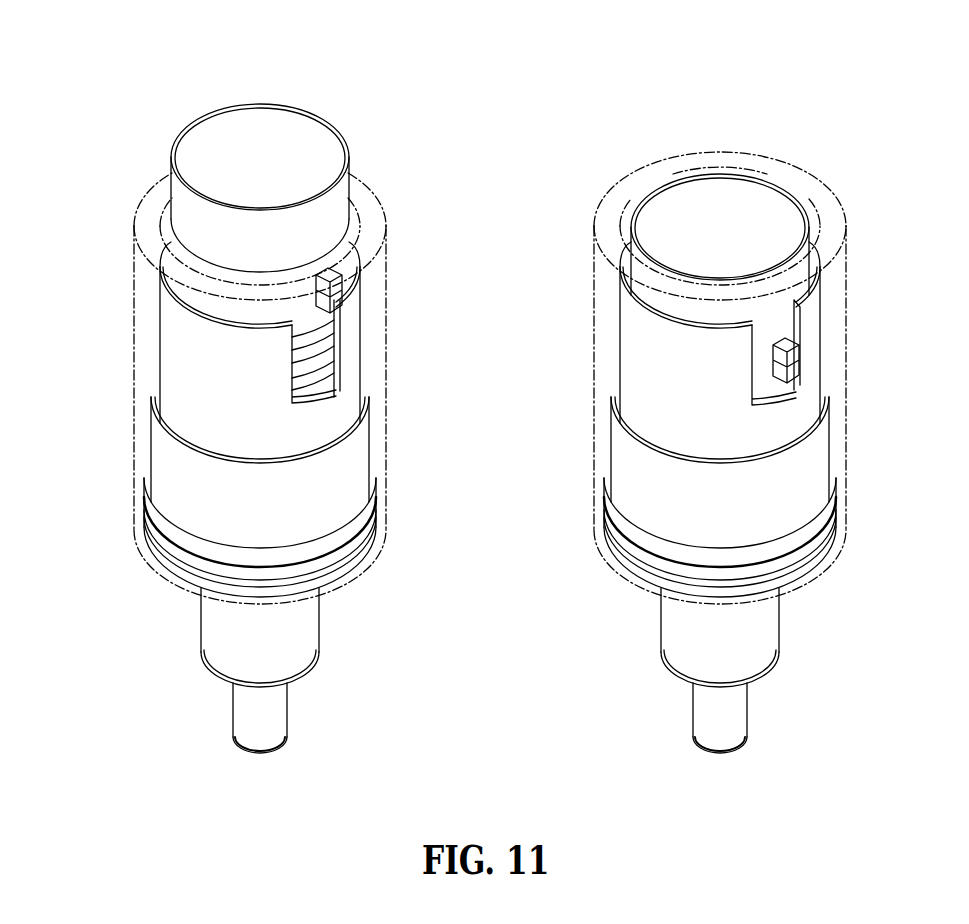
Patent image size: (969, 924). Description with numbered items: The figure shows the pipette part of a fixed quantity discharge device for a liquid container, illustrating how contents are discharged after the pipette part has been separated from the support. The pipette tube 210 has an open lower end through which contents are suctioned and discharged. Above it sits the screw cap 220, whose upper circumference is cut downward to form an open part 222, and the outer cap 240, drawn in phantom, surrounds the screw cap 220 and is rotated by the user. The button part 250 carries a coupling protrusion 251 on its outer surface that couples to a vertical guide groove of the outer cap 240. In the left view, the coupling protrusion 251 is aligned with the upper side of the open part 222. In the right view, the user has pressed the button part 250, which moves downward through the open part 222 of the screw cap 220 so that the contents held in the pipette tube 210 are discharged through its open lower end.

The pipette tube 210 is at (320, 630).
The screw cap 220 is at (371, 443).
The open part 222 is at (335, 354).
The outer cap 240 is at (135, 268).
The button part 250 is at (203, 137).
The coupling protrusion 251 is at (343, 300).